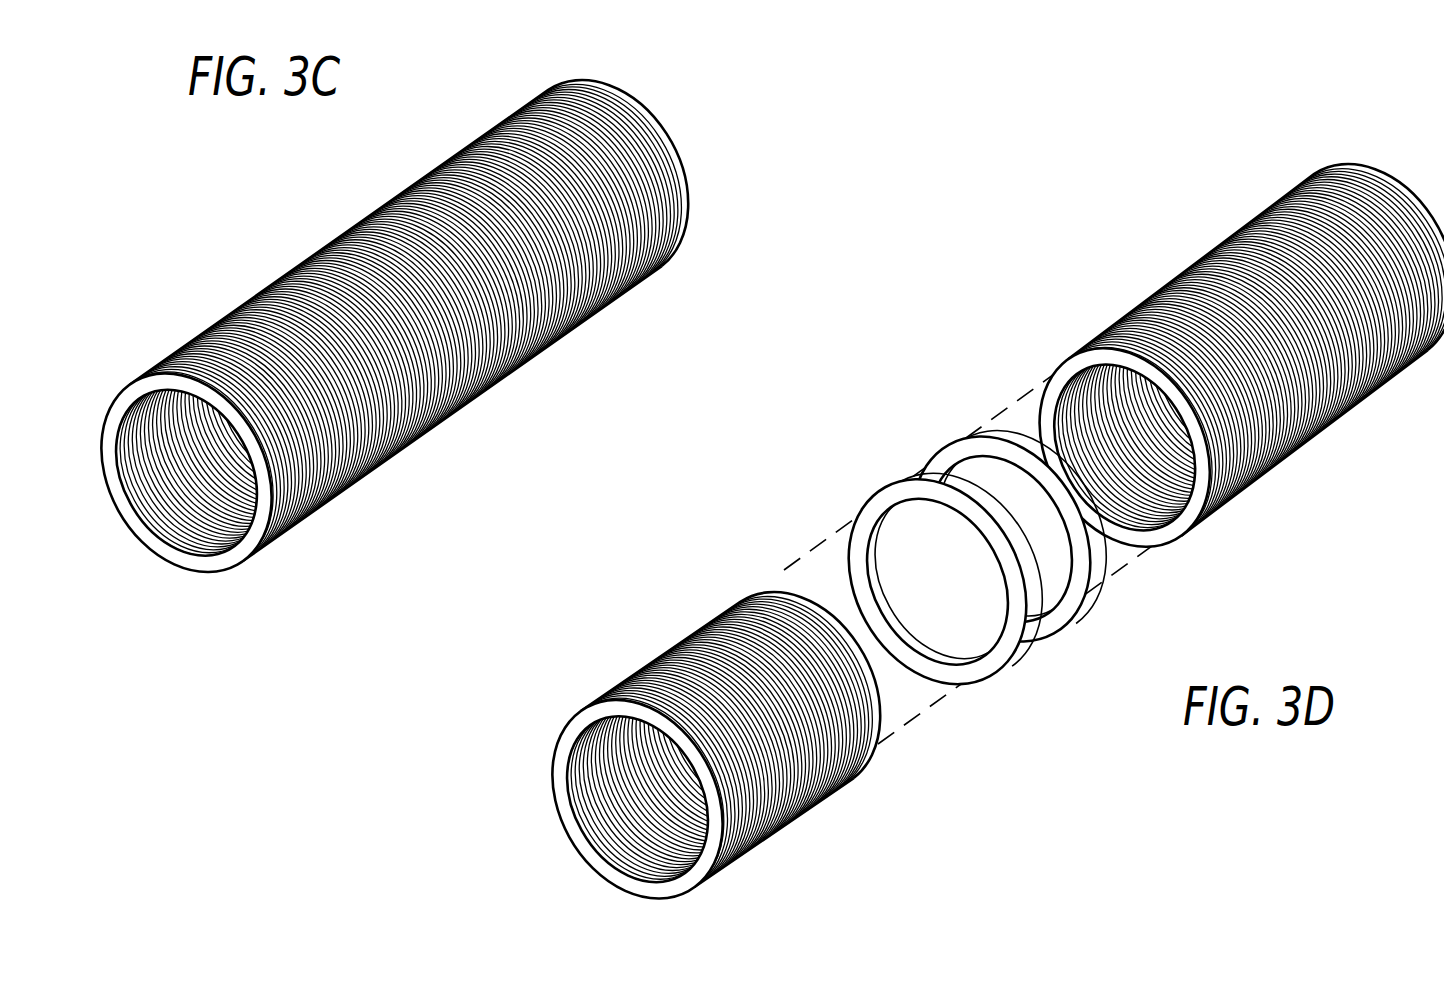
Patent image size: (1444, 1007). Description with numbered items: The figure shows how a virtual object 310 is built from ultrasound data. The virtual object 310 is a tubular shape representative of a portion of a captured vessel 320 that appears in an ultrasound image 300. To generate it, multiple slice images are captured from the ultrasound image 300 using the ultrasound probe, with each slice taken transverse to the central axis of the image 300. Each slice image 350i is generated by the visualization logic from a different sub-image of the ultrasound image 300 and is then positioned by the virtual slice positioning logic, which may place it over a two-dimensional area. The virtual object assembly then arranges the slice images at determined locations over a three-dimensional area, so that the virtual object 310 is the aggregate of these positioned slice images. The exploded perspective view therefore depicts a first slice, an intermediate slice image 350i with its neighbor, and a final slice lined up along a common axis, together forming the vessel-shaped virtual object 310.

In FIG. 3C, the virtual object 310 is at (422, 316).
In FIG. 3C, the captured vessel 320 is at (660, 85).
In FIG. 3D, the slice image 350i is at (882, 488).
In FIG. 3D, the ultrasound image 300 is at (1435, 197).